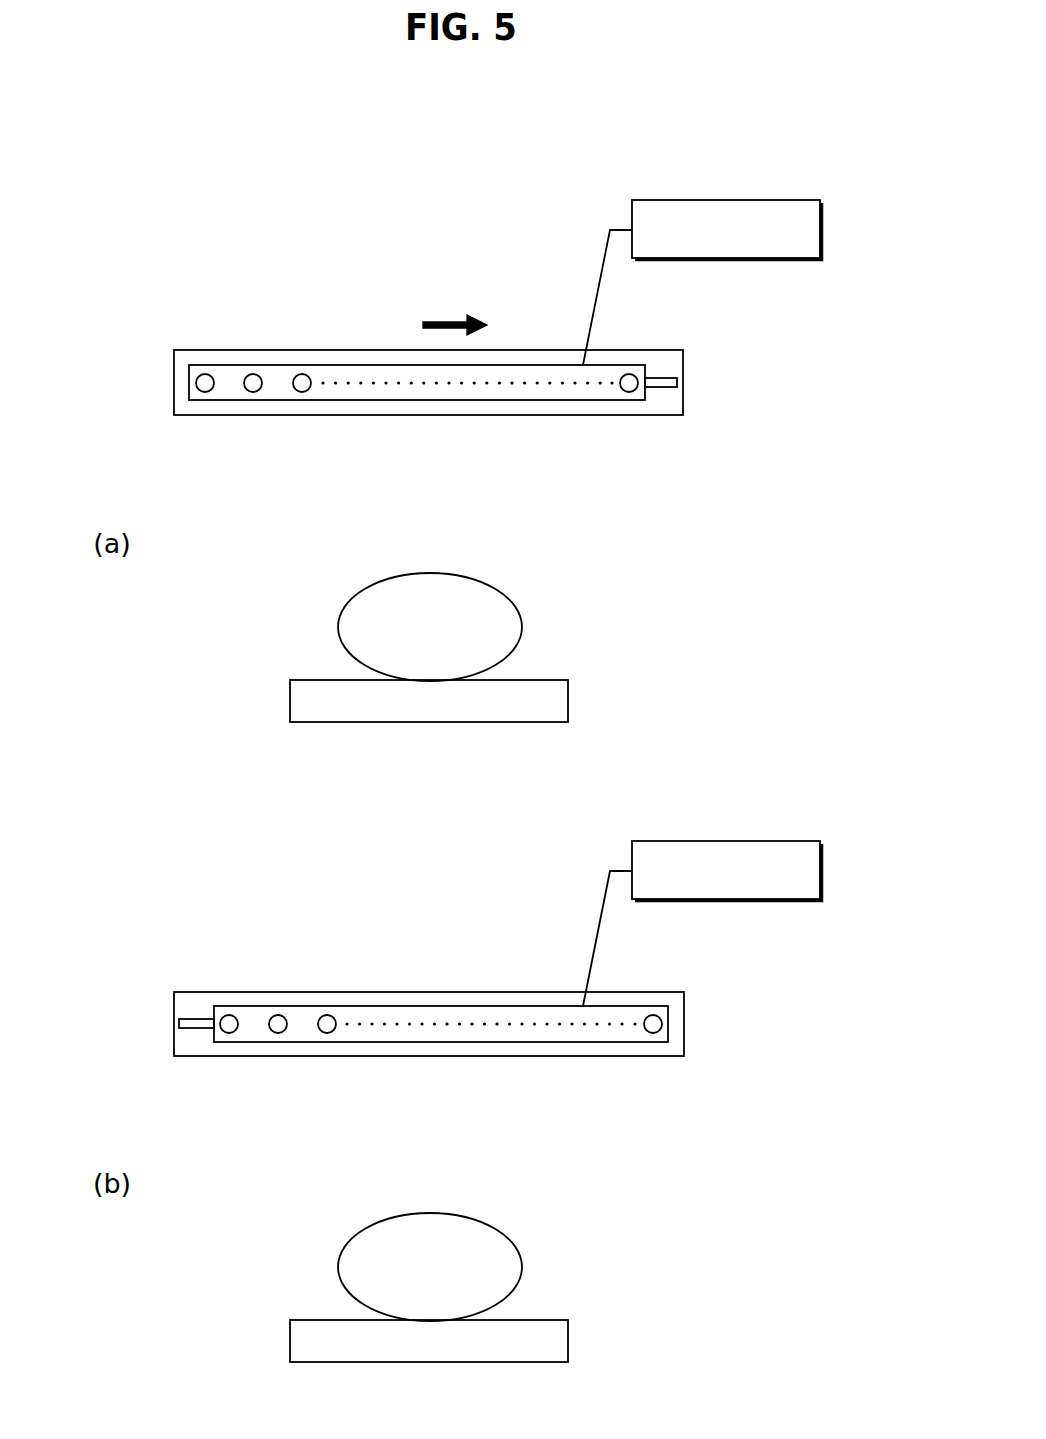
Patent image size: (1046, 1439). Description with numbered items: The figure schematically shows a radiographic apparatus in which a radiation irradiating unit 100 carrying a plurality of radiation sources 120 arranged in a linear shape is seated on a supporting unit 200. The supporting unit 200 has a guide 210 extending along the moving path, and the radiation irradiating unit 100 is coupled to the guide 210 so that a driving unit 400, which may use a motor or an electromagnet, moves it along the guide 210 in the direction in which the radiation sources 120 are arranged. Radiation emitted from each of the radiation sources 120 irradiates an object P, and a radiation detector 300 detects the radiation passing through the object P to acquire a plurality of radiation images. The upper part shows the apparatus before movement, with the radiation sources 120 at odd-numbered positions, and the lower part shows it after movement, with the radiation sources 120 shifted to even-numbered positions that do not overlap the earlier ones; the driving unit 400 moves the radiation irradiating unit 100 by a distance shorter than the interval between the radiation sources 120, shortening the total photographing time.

The radiation irradiating unit 100 is at (557, 365).
The radiation sources 120 is at (415, 344).
The supporting unit 200 is at (683, 383).
The guide 210 is at (662, 387).
The radiation detector 300 is at (553, 700).
The driving unit 400 is at (795, 200).
The object P is at (508, 628).